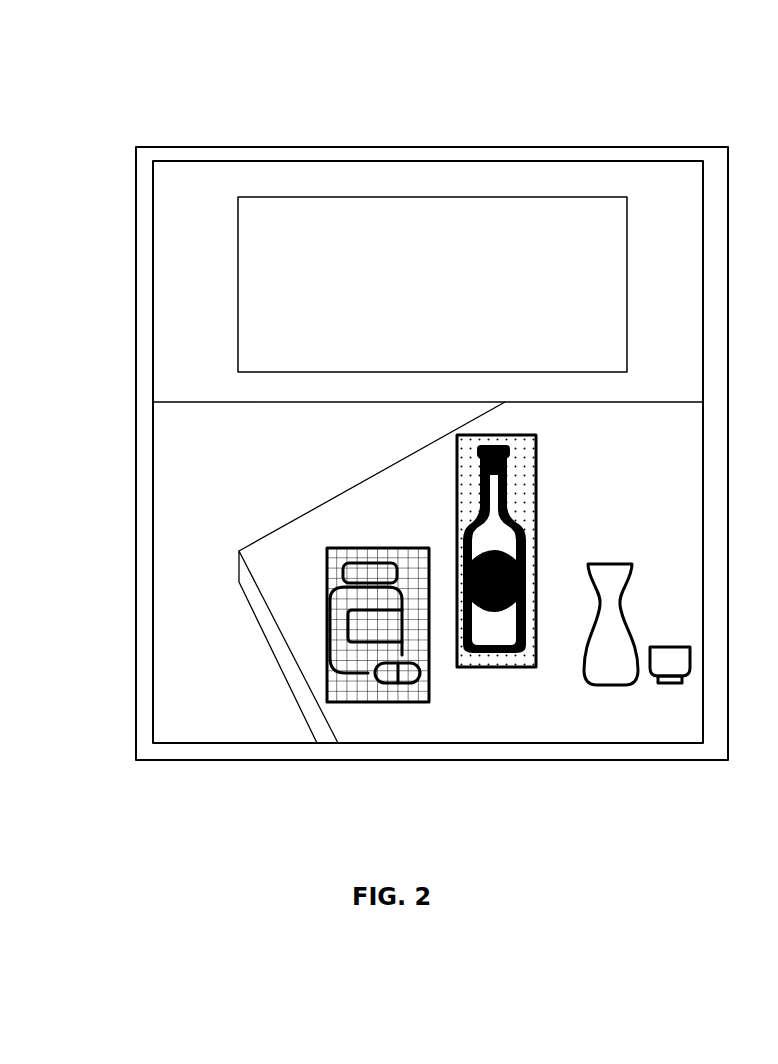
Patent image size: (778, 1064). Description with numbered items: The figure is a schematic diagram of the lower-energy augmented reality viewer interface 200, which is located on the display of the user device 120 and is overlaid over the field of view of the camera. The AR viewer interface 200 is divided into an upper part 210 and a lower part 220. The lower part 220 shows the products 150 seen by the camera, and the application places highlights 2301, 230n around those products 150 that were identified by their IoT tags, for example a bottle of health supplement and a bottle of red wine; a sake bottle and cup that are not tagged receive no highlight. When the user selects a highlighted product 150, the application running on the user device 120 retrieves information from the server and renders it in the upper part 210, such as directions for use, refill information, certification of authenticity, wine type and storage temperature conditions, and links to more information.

The AR viewer interface 200 is at (596, 72).
The user device 120 is at (350, 147).
The upper part 210 is at (495, 179).
The lower part 220 is at (212, 468).
The highlight 2301 is at (473, 490).
The highlight 230n is at (327, 580).
The product 150 is at (507, 487).